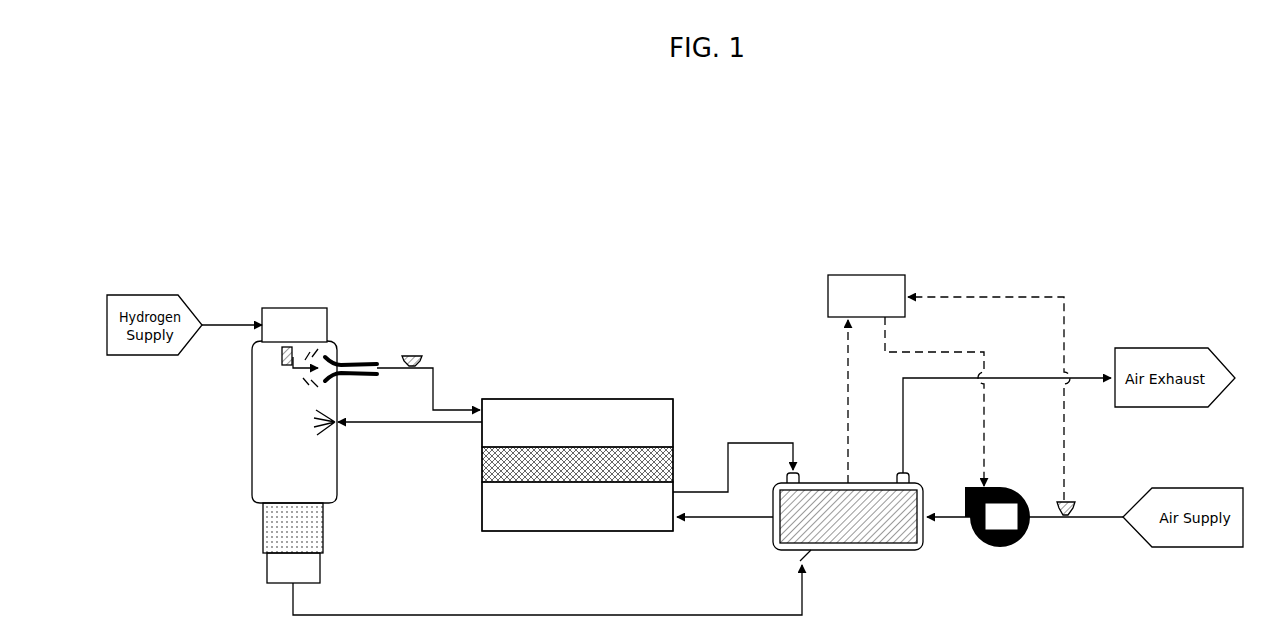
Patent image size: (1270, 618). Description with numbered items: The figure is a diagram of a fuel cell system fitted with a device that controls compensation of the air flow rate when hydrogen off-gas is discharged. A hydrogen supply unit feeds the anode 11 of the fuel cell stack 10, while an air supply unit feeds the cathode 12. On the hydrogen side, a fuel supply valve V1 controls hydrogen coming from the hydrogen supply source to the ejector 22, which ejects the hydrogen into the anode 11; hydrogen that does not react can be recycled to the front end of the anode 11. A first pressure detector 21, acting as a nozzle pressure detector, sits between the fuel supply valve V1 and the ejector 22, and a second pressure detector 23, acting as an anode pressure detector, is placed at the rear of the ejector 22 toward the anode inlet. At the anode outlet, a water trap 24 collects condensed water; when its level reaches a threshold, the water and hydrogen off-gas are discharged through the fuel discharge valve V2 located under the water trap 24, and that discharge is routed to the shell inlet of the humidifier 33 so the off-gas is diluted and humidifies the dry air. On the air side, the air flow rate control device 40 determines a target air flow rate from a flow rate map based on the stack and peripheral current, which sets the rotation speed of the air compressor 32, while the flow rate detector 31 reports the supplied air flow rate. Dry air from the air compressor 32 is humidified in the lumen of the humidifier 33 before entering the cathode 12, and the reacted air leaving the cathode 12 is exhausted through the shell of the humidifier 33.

The fuel cell stack 10 is at (606, 469).
The anode 11 is at (577, 399).
The cathode 12 is at (577, 540).
The first pressure detector 21 is at (282, 357).
The ejector 22 is at (354, 357).
The second pressure detector 23 is at (412, 354).
The water trap 24 is at (263, 527).
The flow rate detector 31 is at (1074, 500).
The air compressor 32 is at (1002, 547).
The humidifier 33 is at (868, 551).
The air flow rate control device 40 is at (865, 275).
The fuel supply valve V1 is at (290, 308).
The fuel discharge valve V2 is at (267, 566).